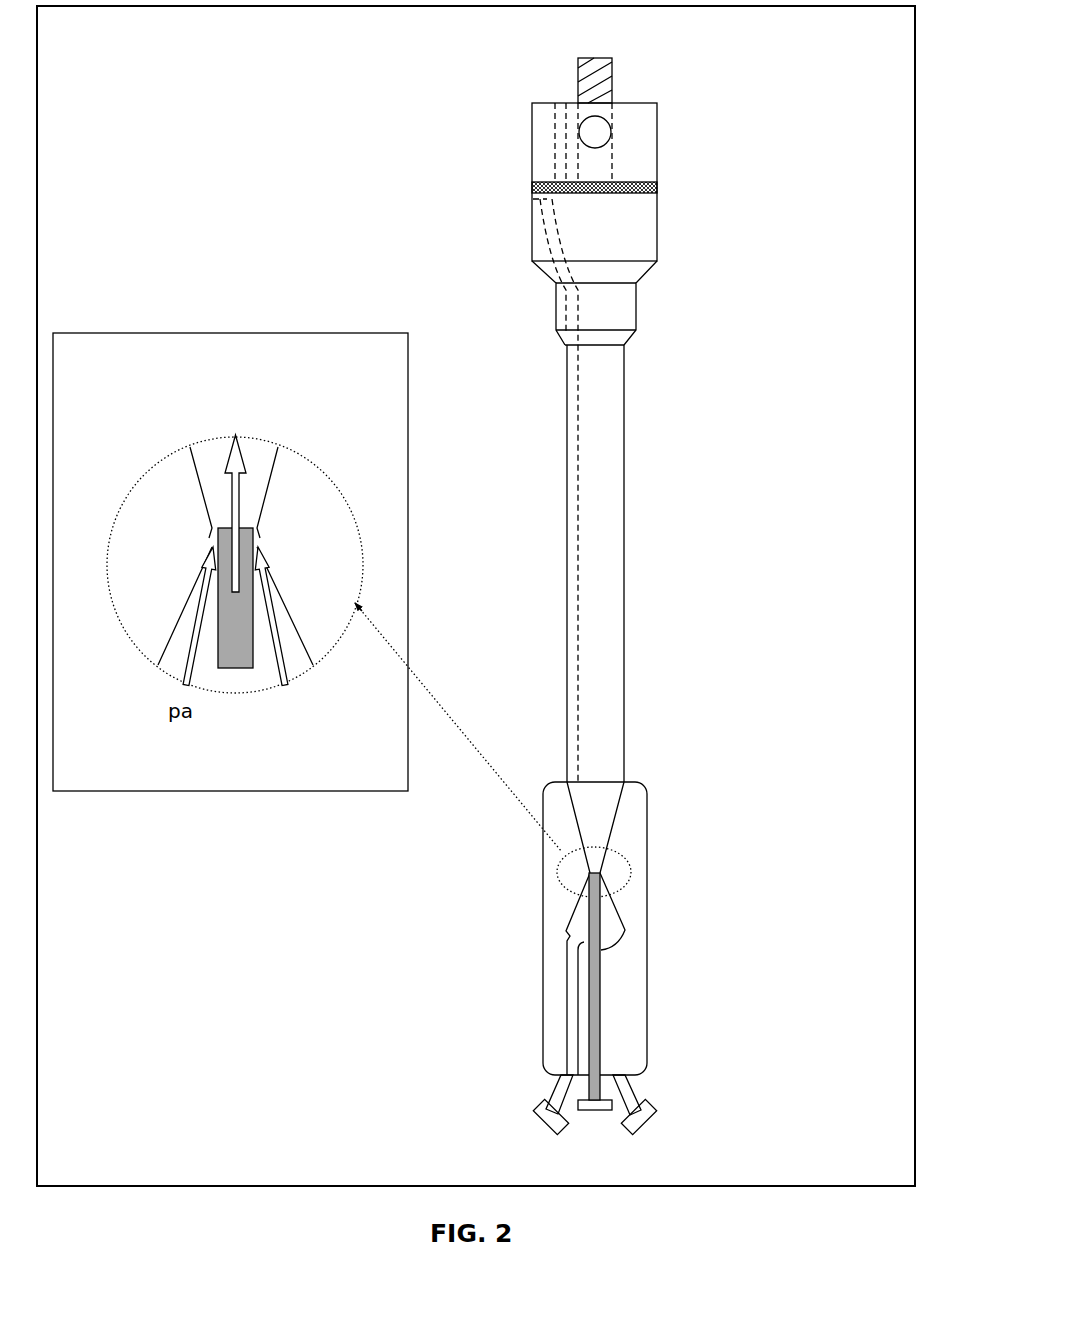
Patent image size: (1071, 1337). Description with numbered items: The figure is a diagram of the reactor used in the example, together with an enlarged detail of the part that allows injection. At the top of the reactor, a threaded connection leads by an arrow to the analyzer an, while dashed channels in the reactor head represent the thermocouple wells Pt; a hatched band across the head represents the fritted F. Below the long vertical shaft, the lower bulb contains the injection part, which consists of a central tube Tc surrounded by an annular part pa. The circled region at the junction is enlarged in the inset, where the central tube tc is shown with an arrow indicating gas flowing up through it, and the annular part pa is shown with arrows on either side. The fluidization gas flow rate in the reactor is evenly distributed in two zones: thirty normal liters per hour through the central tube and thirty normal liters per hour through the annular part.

The thermocouple wells Pt is at (552, 153).
The fritted F is at (633, 194).
The analyzer an is at (594, 56).
The central tube Tc is at (588, 972).
The annular part pa is at (567, 1022).
The central tube tc is at (235, 533).